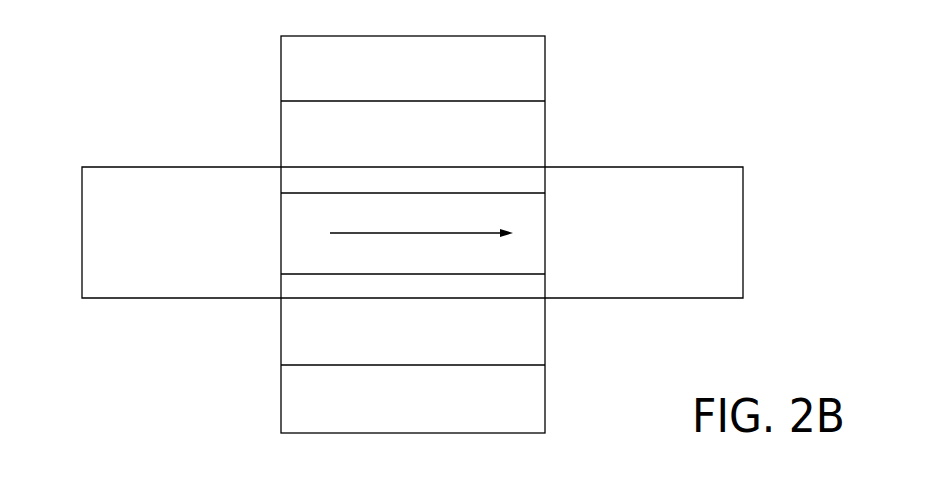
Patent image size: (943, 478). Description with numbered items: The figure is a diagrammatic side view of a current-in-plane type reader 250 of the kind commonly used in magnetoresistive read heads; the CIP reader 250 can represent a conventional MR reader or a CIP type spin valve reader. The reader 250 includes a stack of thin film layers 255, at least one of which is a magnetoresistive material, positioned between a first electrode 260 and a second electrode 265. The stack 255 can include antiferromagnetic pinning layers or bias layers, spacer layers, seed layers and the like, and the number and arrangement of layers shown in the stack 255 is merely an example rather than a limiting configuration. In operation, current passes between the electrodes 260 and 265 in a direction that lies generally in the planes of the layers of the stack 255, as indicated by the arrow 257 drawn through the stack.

The CIP reader 250 is at (80, 80).
The stack of thin film layers 255 is at (562, 156).
The arrow 257 is at (347, 233).
The electrode 260 is at (113, 282).
The electrode 265 is at (727, 274).